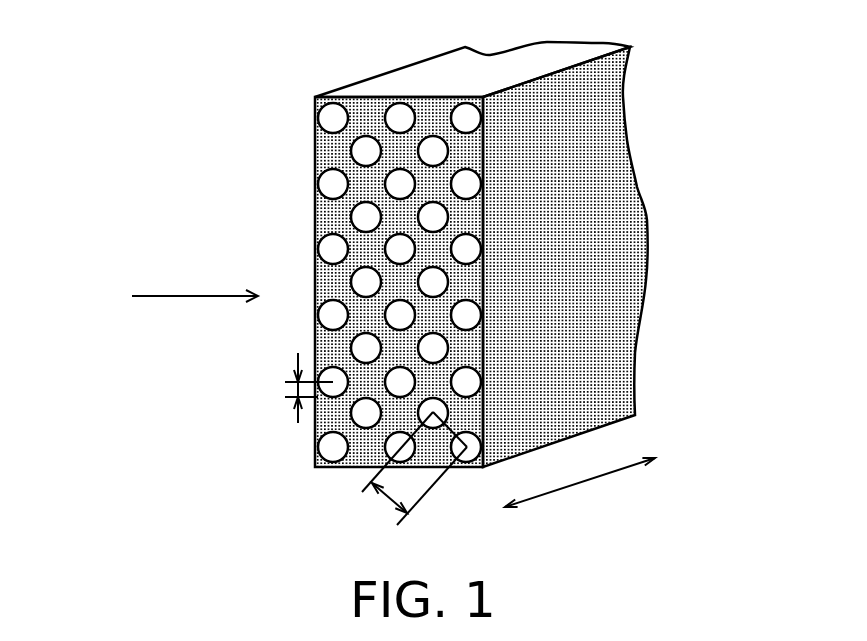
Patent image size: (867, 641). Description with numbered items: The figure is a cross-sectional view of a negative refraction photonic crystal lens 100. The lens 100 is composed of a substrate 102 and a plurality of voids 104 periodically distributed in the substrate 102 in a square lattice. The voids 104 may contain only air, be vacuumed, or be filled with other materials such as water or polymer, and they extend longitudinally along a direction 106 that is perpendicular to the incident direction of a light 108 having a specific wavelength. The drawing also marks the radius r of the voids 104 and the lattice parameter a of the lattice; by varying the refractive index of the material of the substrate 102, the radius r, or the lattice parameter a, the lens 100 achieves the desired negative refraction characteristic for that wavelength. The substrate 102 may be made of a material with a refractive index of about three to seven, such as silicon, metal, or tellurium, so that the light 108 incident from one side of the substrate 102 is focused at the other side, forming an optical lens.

The negative refraction photonic crystal lens 100 is at (258, 104).
The substrate 102 is at (618, 180).
The voids 104 is at (330, 248).
The direction 106 is at (580, 473).
The light 108 is at (169, 293).